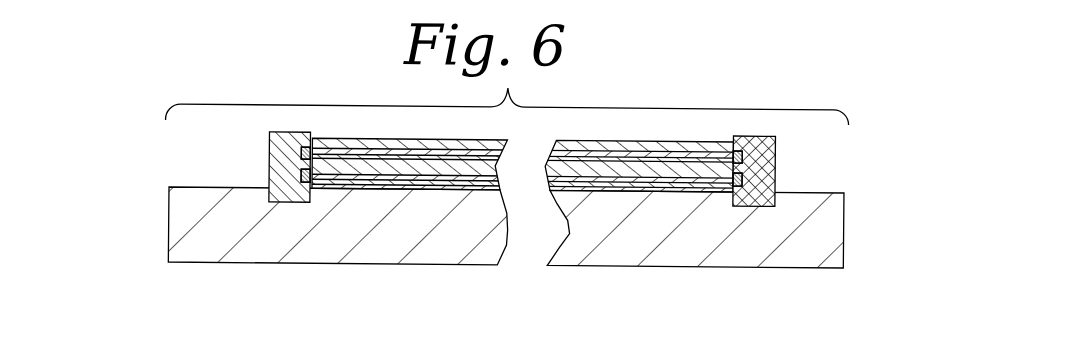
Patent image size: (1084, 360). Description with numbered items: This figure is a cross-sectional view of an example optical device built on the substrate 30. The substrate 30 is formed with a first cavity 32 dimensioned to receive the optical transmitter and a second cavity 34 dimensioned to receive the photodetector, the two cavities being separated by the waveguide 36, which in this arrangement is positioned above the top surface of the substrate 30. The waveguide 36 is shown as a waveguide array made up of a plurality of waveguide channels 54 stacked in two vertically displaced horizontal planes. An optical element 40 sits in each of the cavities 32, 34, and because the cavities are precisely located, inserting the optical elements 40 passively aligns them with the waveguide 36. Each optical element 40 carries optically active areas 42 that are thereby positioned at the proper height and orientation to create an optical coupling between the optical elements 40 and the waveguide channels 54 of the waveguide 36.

The substrate 30 is at (538, 202).
The first cavity 32 is at (267, 186).
The second cavity 34 is at (777, 185).
The waveguide 36 is at (526, 113).
The optical element 40 is at (525, 133).
The optically active area 42 is at (305, 175).
The waveguide channel 54 is at (672, 165).